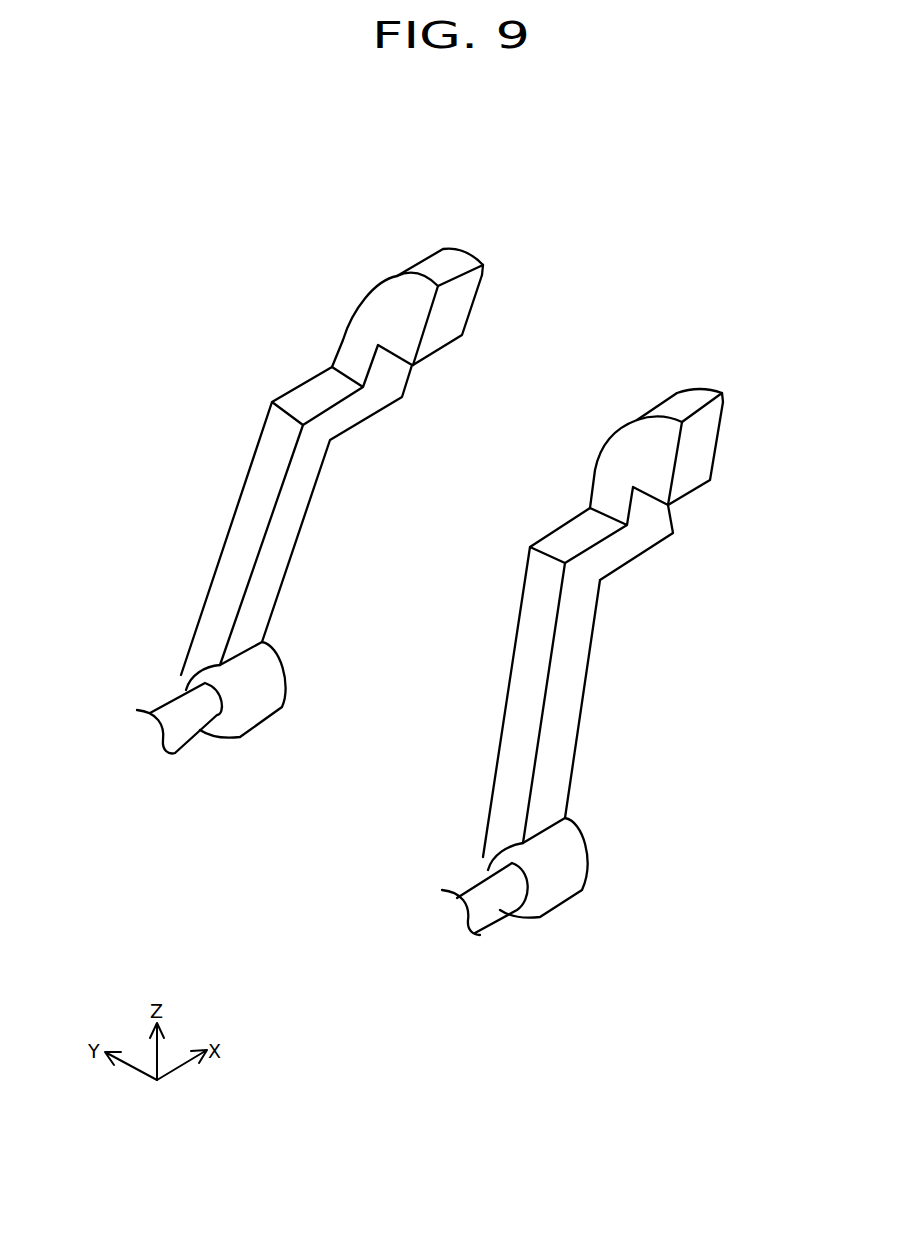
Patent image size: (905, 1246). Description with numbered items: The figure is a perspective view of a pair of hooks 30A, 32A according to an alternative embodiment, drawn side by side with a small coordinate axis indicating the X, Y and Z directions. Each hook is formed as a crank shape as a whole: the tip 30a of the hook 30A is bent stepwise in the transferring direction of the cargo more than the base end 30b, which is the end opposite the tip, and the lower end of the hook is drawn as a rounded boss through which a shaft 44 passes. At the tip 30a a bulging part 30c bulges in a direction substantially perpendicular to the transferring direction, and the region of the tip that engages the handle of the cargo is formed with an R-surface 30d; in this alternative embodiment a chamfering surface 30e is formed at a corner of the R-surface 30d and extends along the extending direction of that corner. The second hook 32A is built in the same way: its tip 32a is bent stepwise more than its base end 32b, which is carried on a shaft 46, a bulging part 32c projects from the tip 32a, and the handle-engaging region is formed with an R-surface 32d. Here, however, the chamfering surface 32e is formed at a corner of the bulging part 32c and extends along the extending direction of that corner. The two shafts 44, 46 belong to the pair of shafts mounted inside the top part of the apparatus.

The hook 30A is at (255, 443).
The tip of the hook 30a is at (355, 347).
The base end of the hook 30b is at (217, 723).
The bulging part 30c is at (463, 305).
The R-surface 30d is at (452, 260).
The chamfering surface 30e is at (482, 266).
The shaft 44 is at (180, 730).
The hook 32A is at (572, 667).
The tip of the hook 32a is at (607, 495).
The base end of the hook 32b is at (530, 907).
The bulging part 32c is at (702, 447).
The R-surface 32d is at (707, 397).
The chamfering surface 32e is at (722, 393).
The shaft 46 is at (480, 910).